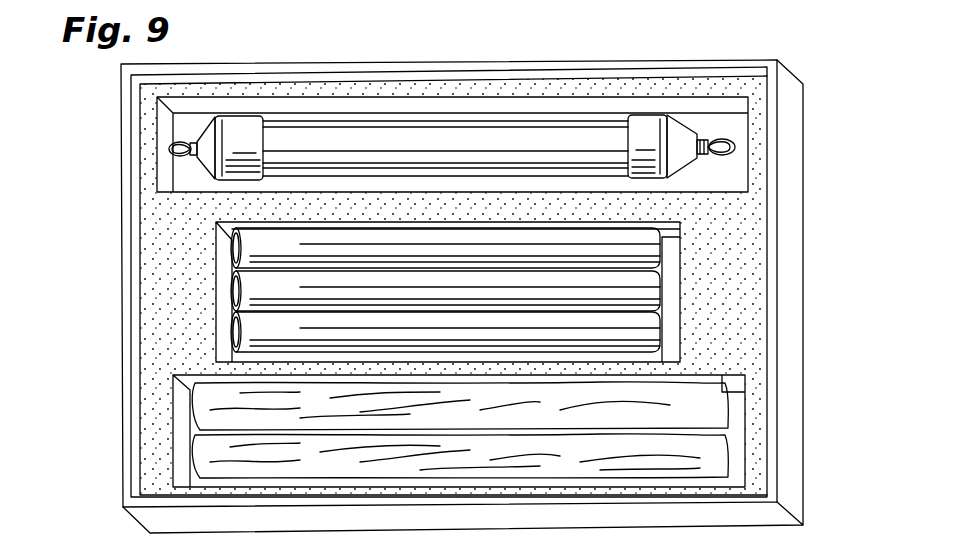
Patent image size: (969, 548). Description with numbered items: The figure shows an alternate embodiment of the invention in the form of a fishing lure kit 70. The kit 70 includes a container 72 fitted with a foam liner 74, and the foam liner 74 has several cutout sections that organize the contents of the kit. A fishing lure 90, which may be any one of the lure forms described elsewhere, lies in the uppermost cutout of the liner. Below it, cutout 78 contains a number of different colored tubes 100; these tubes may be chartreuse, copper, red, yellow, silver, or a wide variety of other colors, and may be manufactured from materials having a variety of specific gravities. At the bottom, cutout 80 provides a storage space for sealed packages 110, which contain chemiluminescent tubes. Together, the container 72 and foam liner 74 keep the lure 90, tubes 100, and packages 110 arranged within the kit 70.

The fishing lure kit 70 is at (80, 191).
The container 72 is at (790, 468).
The foam liner 74 is at (738, 332).
The cutout 78 is at (683, 295).
The cutout 80 is at (745, 426).
The fishing lure 90 is at (485, 135).
The tubes 100 is at (255, 332).
The sealed packages 110 is at (215, 445).